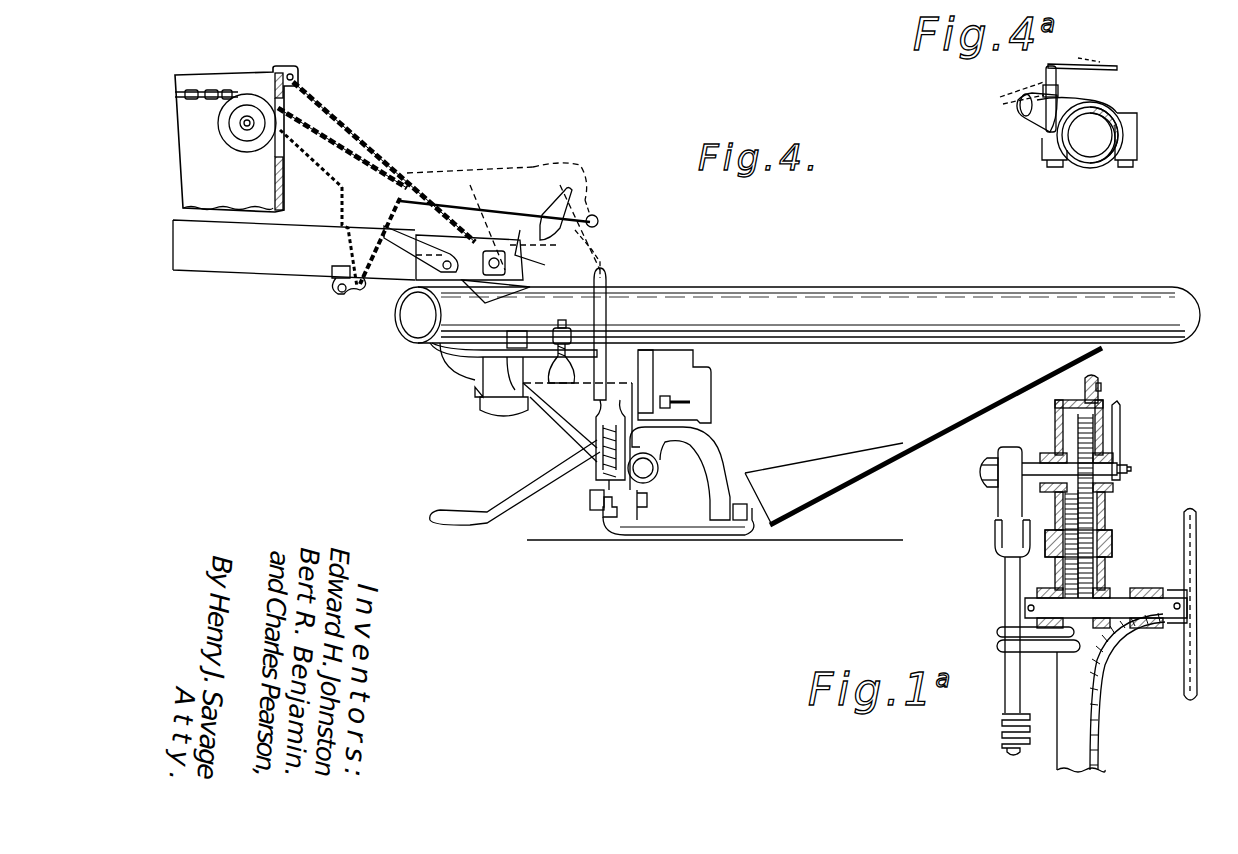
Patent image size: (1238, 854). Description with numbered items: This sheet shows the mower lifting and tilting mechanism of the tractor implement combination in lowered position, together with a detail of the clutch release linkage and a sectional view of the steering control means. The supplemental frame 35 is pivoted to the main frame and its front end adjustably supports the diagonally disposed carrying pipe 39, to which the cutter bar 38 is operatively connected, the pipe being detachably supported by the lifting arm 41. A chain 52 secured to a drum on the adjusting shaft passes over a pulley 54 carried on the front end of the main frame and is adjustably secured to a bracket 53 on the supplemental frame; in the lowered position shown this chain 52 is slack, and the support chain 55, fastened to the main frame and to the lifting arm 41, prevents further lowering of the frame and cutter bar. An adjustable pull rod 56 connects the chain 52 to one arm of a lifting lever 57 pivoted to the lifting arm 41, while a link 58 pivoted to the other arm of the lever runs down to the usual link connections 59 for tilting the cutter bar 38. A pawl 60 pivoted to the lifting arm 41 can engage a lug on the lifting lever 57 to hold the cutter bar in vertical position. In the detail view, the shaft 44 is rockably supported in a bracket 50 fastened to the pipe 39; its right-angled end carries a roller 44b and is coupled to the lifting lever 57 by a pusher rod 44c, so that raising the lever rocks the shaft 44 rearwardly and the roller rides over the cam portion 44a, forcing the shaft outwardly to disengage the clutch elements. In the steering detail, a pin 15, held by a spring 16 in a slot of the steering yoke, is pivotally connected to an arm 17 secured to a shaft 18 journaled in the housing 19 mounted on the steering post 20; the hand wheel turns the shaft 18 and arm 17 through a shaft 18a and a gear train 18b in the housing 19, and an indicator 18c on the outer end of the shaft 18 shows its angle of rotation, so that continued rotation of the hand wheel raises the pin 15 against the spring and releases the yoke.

In FIG. 4, the chain 52 is at (212, 90).
In FIG. 4, the pulley 54 is at (236, 147).
In FIG. 4, the support chain 55 is at (353, 131).
In FIG. 4, the supplemental frame 35 is at (284, 266).
In FIG. 4, the bracket 53 is at (380, 292).
In FIG. 4, the pawl 60 is at (402, 233).
In FIG. 4, the lifting arm 41 is at (466, 258).
In FIG. 4A, the shaft 44 is at (1047, 132).
In FIG. 4A, the cam portion 44a is at (1010, 92).
In FIG. 4A, the roller 44b is at (1063, 85).
In FIG. 4, the pusher rod 44c is at (520, 230).
In FIG. 4A, the pusher rod 44c is at (1100, 64).
In FIG. 4A, the bracket 50 is at (1027, 110).
In FIG. 4, the adjustable pull rod 56 is at (540, 213).
In FIG. 4, the lifting lever 57 is at (598, 222).
In FIG. 4, the carrying pipe 39 is at (683, 289).
In FIG. 4A, the carrying pipe 39 is at (1120, 108).
In FIG. 4, the link 58 is at (614, 347).
In FIG. 4, the link connections 59 is at (592, 481).
In FIG. 4, the cutter bar 38 is at (610, 530).
In FIG. 1A, the pin 15 is at (1005, 580).
In FIG. 1A, the spring 16 is at (1005, 732).
In FIG. 1A, the arm 17 is at (1007, 496).
In FIG. 1A, the shaft 18 is at (983, 472).
In FIG. 1A, the shaft 18a is at (1115, 598).
In FIG. 1A, the gear train 18b is at (1107, 520).
In FIG. 1A, the indicator 18c is at (1122, 441).
In FIG. 1A, the housing 19 is at (1073, 398).
In FIG. 1A, the steering post 20 is at (1102, 700).